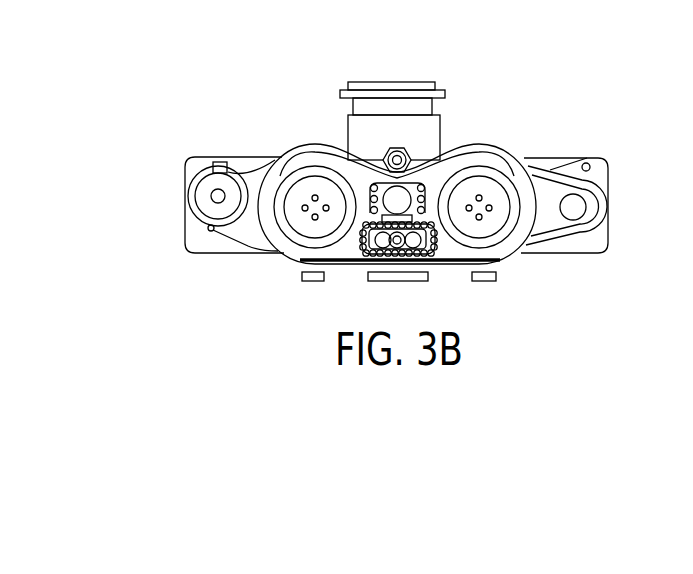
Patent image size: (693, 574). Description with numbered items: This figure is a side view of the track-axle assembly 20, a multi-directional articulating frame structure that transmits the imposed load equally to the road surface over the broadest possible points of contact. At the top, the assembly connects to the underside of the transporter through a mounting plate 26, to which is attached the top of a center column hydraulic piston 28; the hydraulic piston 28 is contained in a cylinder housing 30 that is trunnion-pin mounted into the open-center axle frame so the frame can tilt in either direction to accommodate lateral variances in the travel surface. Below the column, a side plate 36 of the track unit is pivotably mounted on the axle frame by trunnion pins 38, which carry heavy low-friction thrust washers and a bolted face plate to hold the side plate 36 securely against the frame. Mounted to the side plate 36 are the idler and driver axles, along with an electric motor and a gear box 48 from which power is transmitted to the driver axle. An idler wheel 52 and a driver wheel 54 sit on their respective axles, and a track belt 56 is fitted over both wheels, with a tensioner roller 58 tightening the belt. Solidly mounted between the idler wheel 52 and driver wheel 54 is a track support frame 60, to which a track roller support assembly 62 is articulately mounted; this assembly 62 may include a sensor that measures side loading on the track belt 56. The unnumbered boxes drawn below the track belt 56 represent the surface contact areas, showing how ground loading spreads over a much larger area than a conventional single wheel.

The track-axle assembly 20 is at (177, 156).
The mounting plate 26 is at (431, 82).
The center column hydraulic piston 28 is at (445, 99).
The cylinder housing 30 is at (428, 128).
The side plate 36 is at (598, 200).
The trunnion pins 38 is at (393, 195).
The gear box 48 is at (605, 248).
The idler wheel 52 is at (302, 170).
The driver wheel 54 is at (503, 172).
The track belt 56 is at (490, 152).
The tensioner roller 58 is at (412, 162).
The track support frame 60 is at (417, 252).
The track roller support assembly 62 is at (365, 252).